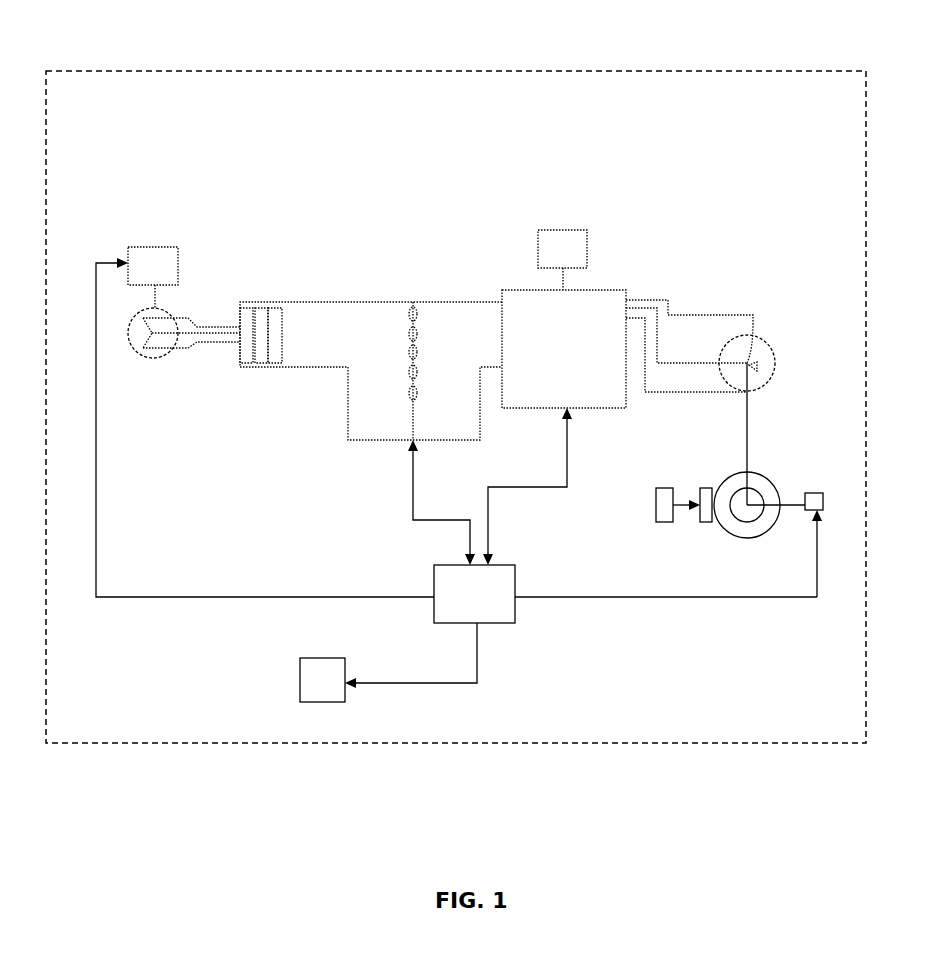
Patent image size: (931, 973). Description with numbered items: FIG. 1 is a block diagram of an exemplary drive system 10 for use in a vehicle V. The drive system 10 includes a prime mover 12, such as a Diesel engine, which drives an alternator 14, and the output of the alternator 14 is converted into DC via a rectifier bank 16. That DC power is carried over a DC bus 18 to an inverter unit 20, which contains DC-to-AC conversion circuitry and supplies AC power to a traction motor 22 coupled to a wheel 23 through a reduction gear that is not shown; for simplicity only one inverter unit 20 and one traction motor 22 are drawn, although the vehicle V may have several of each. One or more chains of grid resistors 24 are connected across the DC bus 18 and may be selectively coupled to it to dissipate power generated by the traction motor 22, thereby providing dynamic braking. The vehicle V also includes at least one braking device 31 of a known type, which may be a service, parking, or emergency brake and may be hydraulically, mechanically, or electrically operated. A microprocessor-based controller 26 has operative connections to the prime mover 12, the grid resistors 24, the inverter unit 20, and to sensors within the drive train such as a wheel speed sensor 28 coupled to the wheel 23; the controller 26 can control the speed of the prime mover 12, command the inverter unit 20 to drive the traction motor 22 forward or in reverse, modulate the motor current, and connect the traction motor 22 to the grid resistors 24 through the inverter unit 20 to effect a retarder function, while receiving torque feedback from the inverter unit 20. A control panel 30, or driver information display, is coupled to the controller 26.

The vehicle V is at (610, 71).
The drive system 10 is at (524, 174).
The prime mover 12 is at (153, 266).
The alternator 14 is at (146, 356).
The rectifier bank 16 is at (262, 318).
The DC bus 18 is at (340, 301).
The inverter unit 20 is at (564, 319).
The traction motor 22 is at (767, 343).
The wheel 23 is at (764, 482).
The grid resistors 24 is at (413, 317).
The controller 26 is at (474, 594).
The wheel speed sensor 28 is at (811, 497).
The control panel 30 is at (322, 680).
The braking device 31 is at (671, 470).